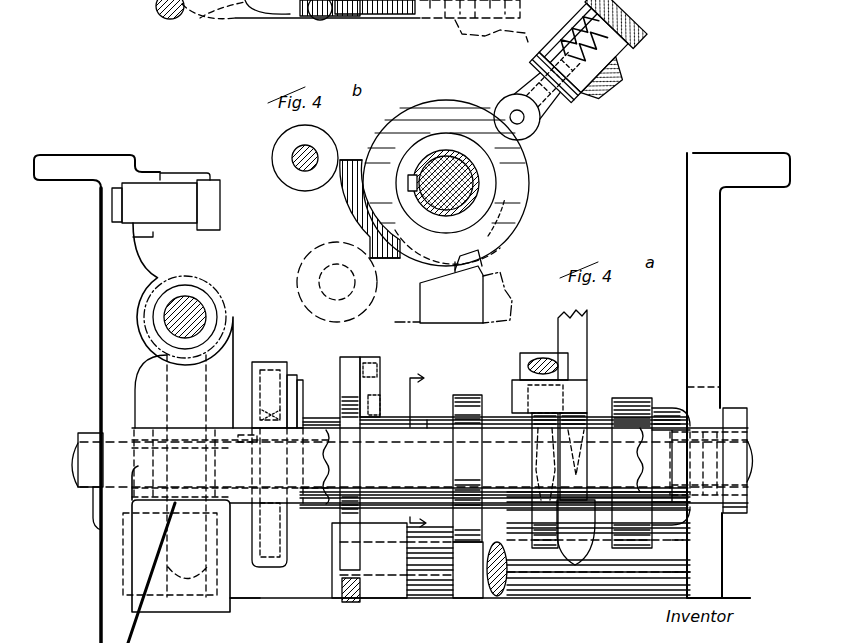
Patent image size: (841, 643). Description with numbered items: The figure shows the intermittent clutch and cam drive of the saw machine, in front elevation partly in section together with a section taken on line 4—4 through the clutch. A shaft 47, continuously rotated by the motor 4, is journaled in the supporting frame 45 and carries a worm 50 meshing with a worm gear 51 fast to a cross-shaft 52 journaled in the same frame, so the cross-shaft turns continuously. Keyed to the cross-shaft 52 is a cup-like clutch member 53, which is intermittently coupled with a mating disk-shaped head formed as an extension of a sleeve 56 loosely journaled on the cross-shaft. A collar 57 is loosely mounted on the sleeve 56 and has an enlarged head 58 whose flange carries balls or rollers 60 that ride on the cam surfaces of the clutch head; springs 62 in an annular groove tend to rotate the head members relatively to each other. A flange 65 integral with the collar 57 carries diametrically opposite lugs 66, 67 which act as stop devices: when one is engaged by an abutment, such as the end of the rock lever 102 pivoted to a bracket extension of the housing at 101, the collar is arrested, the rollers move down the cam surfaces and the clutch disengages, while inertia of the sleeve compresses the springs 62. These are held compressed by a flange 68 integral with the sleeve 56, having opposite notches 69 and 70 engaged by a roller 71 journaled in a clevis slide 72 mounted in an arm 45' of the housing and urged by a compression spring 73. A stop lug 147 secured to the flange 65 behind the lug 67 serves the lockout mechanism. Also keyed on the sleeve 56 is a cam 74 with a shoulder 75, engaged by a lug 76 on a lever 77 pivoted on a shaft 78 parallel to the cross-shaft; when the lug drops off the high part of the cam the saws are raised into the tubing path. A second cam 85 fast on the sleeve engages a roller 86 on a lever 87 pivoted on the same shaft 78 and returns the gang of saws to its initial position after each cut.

In FIG. 4A, the motor 4 is at (425, 454).
In FIG. 4A, the supporting frame 45 is at (412, 398).
In FIG. 4B, the arm of housing 45' is at (632, 29).
In FIG. 4A, the shaft 47 is at (190, 312).
In FIG. 4A, the worm 50 is at (232, 303).
In FIG. 4A, the worm gear 51 is at (188, 598).
In FIG. 4B, the cross-shaft 52 is at (420, 166).
In FIG. 4A, the cross-shaft 52 is at (72, 455).
In FIG. 4A, the clutch member 53 is at (280, 355).
In FIG. 4B, the sleeve 56 is at (470, 208).
In FIG. 4A, the sleeve 56 is at (333, 424).
In FIG. 4A, the collar 57 is at (426, 420).
In FIG. 4A, the head 58 is at (301, 388).
In FIG. 4A, the balls or rollers 60 is at (297, 376).
In FIG. 4A, the springs 62 is at (233, 407).
In FIG. 4A, the flange 65 is at (352, 470).
In FIG. 4A, the lug 66 is at (348, 558).
In FIG. 4A, the lug 67 is at (360, 352).
In FIG. 4B, the flange 68 is at (362, 216).
In FIG. 4A, the flange 68 is at (535, 468).
In FIG. 4B, the notch 69 is at (380, 258).
In FIG. 4B, the notch 70 is at (512, 168).
In FIG. 4B, the roller 71 is at (510, 96).
In FIG. 4A, the roller 71 is at (550, 394).
In FIG. 4B, the clevis slide 72 is at (608, 82).
In FIG. 4A, the clevis slide 72 is at (560, 368).
In FIG. 4B, the compression spring 73 is at (613, 20).
In FIG. 4B, the cam 74 is at (505, 230).
In FIG. 4A, the cam 74 is at (466, 395).
In FIG. 4B, the shoulder 75 is at (494, 256).
In FIG. 4B, the lug 76 is at (322, 18).
In FIG. 4A, the lug 76 is at (472, 560).
In FIG. 4B, the lever 77 is at (285, 20).
In FIG. 4A, the lever 77 is at (504, 594).
In FIG. 4B, the shaft 78 is at (222, 20).
In FIG. 4B, the cam 85 is at (338, 190).
In FIG. 4A, the cam 85 is at (632, 412).
In FIG. 4B, the roller 86 is at (282, 150).
In FIG. 4A, the roller 86 is at (622, 398).
In FIG. 4A, the lever 87 is at (585, 320).
In FIG. 4B, the pivot 101 is at (452, 12).
In FIG. 4A, the rock lever 102 is at (346, 602).
In FIG. 4A, the stop lug 147 is at (380, 388).